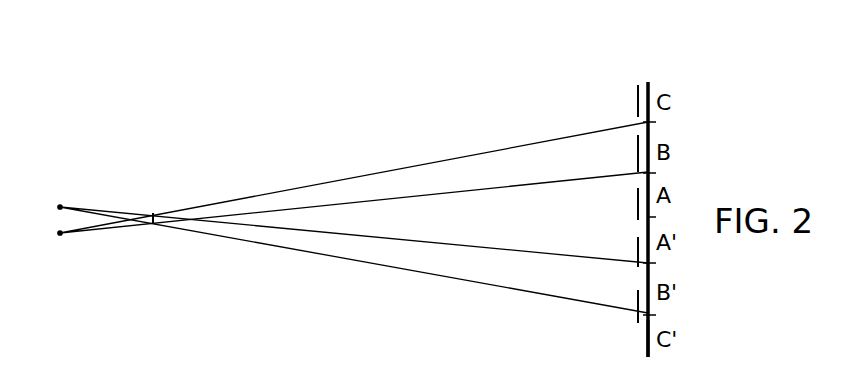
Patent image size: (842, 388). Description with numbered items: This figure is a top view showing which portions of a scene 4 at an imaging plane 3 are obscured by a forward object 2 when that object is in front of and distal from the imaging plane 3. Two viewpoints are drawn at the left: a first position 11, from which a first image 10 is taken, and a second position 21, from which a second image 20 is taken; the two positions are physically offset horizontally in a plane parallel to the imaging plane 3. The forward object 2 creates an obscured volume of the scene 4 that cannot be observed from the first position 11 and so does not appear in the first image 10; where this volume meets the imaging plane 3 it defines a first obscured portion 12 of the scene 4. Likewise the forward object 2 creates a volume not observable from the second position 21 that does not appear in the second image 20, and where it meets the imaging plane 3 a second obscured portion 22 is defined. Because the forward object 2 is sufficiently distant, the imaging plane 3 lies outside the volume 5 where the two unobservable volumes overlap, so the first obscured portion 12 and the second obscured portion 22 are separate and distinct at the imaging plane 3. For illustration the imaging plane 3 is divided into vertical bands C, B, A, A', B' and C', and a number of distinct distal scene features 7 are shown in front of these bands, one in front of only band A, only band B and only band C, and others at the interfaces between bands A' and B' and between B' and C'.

The forward object 2 is at (153, 203).
The imaging plane 3 is at (652, 82).
The scene 4 is at (627, 73).
The volume 5 is at (160, 222).
The distal scene feature 7 is at (637, 101).
The first image 10 is at (628, 350).
The first position 11 is at (60, 207).
The first obscured portion 12 is at (372, 252).
The second image 20 is at (561, 99).
The second position 21 is at (60, 233).
The second obscured portion 22 is at (371, 178).